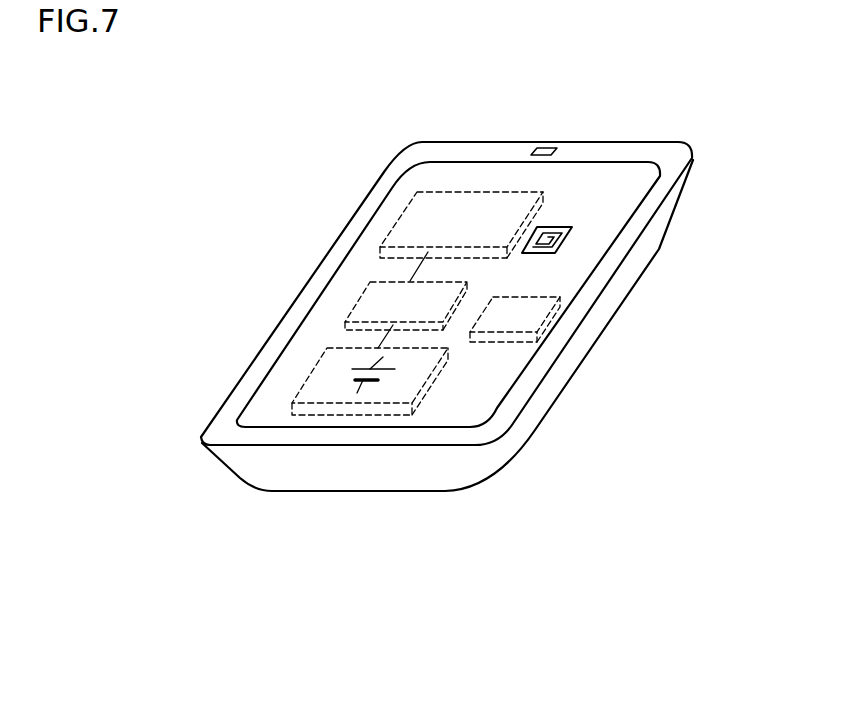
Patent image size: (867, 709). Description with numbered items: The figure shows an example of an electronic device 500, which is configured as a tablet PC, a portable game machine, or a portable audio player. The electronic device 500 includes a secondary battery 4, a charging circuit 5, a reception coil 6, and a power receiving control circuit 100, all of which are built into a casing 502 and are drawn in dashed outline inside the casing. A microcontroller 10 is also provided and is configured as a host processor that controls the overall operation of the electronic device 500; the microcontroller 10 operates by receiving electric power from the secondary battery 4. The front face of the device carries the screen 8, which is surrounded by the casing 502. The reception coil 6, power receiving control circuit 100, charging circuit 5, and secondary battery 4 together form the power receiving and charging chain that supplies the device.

The electronic device 500 is at (468, 632).
The casing 502 is at (517, 437).
The display screen 8 is at (618, 178).
The reception coil 6 is at (572, 232).
The power receiving control circuit 100 is at (420, 225).
The charging circuit 5 is at (377, 307).
The secondary battery 4 is at (313, 408).
The microcontroller 10 is at (523, 317).